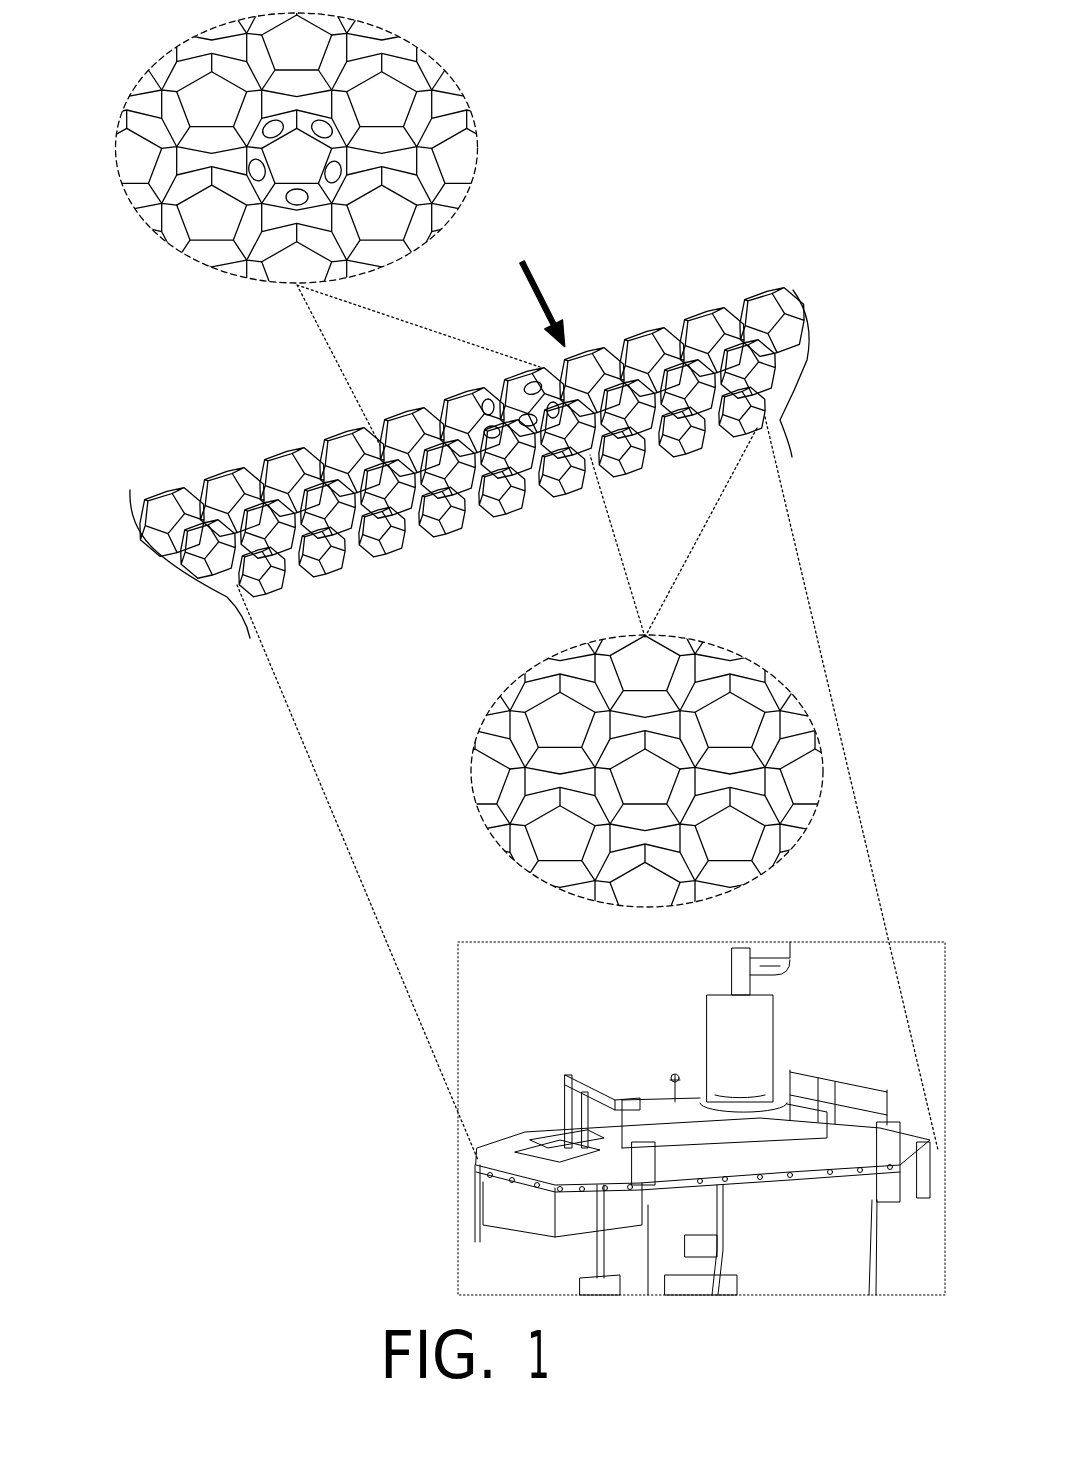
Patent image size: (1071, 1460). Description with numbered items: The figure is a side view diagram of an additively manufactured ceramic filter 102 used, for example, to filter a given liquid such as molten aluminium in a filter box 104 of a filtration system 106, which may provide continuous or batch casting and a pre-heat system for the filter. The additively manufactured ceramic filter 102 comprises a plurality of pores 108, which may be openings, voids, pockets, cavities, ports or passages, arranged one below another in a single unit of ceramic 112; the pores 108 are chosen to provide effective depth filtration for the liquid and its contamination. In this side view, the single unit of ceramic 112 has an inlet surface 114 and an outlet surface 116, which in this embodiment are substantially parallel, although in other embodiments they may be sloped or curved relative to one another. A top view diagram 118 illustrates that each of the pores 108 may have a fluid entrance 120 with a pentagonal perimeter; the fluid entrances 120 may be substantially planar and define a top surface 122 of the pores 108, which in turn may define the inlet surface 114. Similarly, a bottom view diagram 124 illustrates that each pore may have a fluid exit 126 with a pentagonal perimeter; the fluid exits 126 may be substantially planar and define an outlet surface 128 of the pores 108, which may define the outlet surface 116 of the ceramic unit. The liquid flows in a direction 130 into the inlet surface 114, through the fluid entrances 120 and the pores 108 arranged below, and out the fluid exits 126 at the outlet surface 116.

The additively manufactured ceramic filter 102 is at (421, 351).
The filter box 104 is at (636, 1082).
The filtration system 106 is at (701, 1118).
The pores 108 is at (190, 75).
The single unit of ceramic 112 is at (325, 448).
The inlet surface 114 is at (442, 390).
The outlet surface 116 is at (452, 543).
The top view diagram 118 is at (280, 186).
The fluid entrance 120 is at (204, 101).
The top surface 122 is at (148, 171).
The bottom view diagram 124 is at (629, 758).
The fluid exit 126 is at (550, 728).
The outlet surface 128 is at (503, 794).
The direction 130 is at (522, 262).